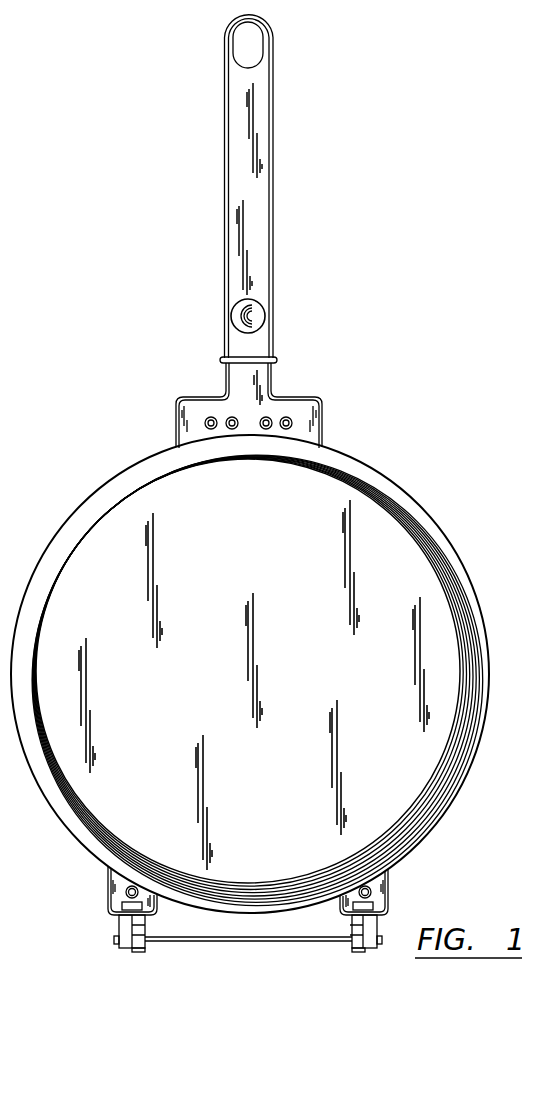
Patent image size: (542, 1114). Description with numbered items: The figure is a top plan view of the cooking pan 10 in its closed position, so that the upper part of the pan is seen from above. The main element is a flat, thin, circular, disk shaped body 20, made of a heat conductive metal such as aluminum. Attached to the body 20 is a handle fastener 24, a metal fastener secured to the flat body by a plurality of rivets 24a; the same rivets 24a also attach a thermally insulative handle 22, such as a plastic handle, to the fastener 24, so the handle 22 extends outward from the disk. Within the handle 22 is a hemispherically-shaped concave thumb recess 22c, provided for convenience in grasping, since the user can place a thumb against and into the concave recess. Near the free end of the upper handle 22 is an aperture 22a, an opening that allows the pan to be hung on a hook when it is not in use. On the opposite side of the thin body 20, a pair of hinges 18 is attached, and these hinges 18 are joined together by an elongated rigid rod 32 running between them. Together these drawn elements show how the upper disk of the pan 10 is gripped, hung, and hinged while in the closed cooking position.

The cooking pan 10 is at (418, 436).
The hinges 18 is at (118, 927).
The body 20 is at (406, 552).
The handle 22 is at (252, 190).
The aperture 22a is at (262, 26).
The thumb recess 22c is at (258, 316).
The handle fastener 24 is at (263, 383).
The rivets 24a is at (292, 419).
The rod 32 is at (250, 943).